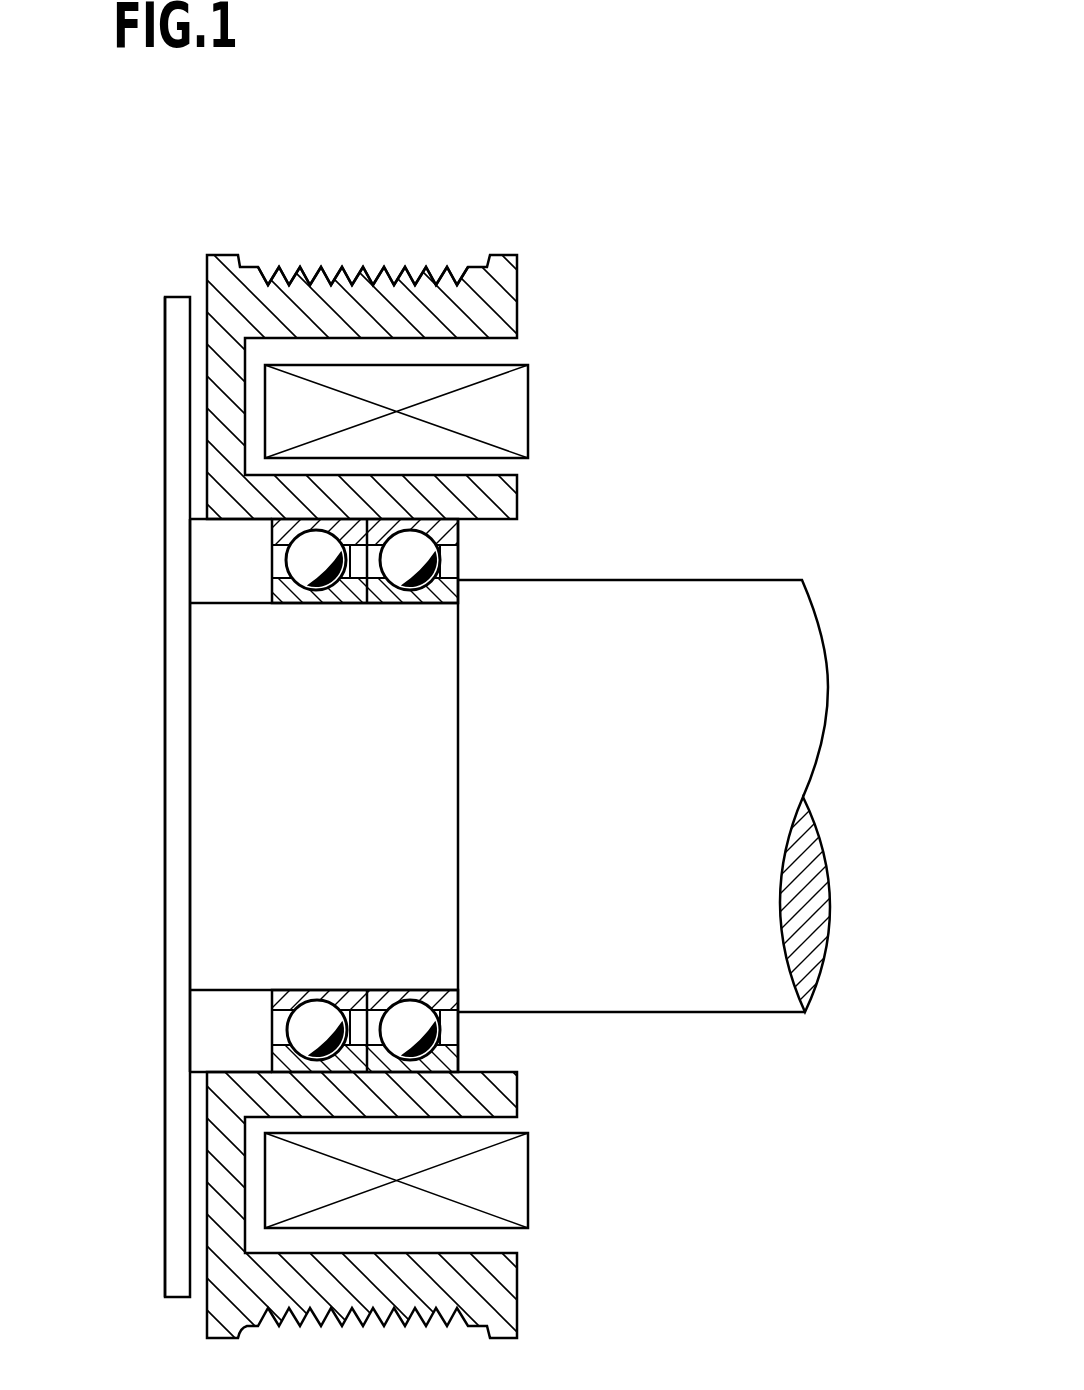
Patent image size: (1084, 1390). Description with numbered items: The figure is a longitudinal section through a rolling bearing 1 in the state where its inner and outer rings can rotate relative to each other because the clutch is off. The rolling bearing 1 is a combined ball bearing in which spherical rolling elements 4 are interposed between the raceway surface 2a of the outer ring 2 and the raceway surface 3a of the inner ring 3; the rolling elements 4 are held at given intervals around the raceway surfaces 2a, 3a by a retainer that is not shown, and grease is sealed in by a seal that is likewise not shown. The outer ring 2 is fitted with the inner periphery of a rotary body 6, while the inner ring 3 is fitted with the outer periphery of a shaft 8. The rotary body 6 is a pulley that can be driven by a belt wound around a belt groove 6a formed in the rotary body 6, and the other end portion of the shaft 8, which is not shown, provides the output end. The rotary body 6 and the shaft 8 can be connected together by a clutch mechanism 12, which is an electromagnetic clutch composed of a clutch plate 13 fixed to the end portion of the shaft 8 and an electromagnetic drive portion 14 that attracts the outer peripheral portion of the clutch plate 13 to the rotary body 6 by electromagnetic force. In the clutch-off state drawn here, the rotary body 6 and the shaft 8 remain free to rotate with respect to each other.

The rolling bearing 1 is at (242, 566).
The outer ring 2 is at (427, 527).
The raceway surface of the outer ring 2a is at (458, 526).
The inner ring 3 is at (382, 592).
The raceway surface of the inner ring 3a is at (397, 570).
The rolling elements 4 is at (460, 560).
The rotary body 6 is at (505, 300).
The belt groove 6a is at (432, 270).
The shaft 8 is at (738, 620).
The clutch mechanism 12 is at (146, 903).
The clutch plate 13 is at (172, 1183).
The electromagnetic drive portion 14 is at (500, 1183).